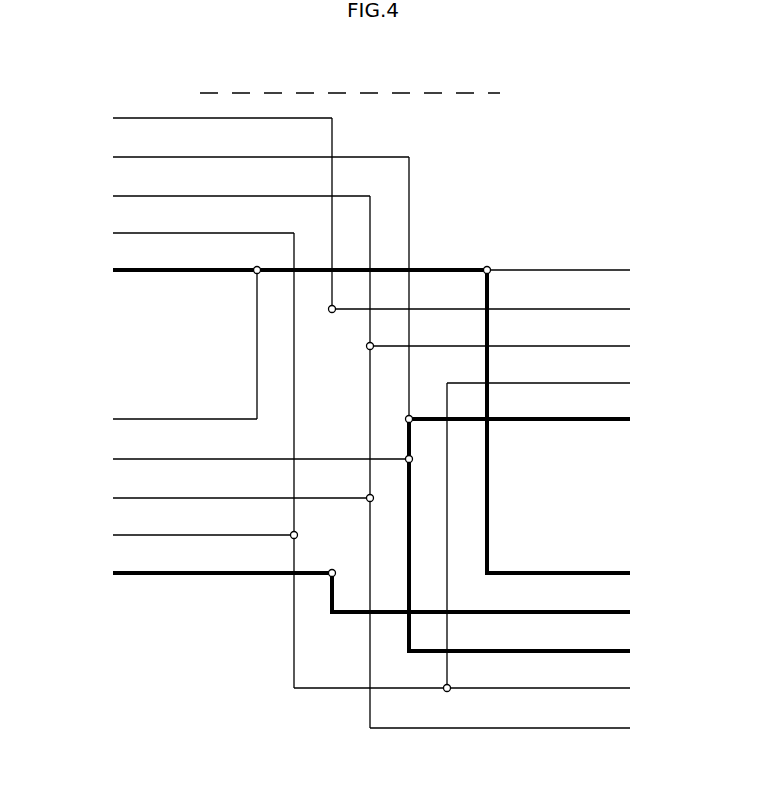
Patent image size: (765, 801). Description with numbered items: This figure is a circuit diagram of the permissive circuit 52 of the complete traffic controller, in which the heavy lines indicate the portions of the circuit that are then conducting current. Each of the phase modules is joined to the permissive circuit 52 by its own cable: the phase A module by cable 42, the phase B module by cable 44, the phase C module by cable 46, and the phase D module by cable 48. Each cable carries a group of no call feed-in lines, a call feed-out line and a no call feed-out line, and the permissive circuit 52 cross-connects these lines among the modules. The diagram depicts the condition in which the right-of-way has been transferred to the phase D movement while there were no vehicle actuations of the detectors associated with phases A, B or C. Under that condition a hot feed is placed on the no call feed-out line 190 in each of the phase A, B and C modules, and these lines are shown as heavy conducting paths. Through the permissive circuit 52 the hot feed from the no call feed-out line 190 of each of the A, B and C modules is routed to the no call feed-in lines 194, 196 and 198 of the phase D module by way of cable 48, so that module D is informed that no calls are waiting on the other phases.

The permissive circuit 52 is at (303, 91).
The cable 42 is at (100, 297).
The cable 44 is at (640, 435).
The cable 46 is at (100, 595).
The cable 48 is at (640, 748).
The no call feed-out line 190 is at (172, 273).
The no call feed-in line 194 is at (537, 571).
The no call feed-in line 196 is at (535, 610).
The no call feed-in line 198 is at (533, 650).